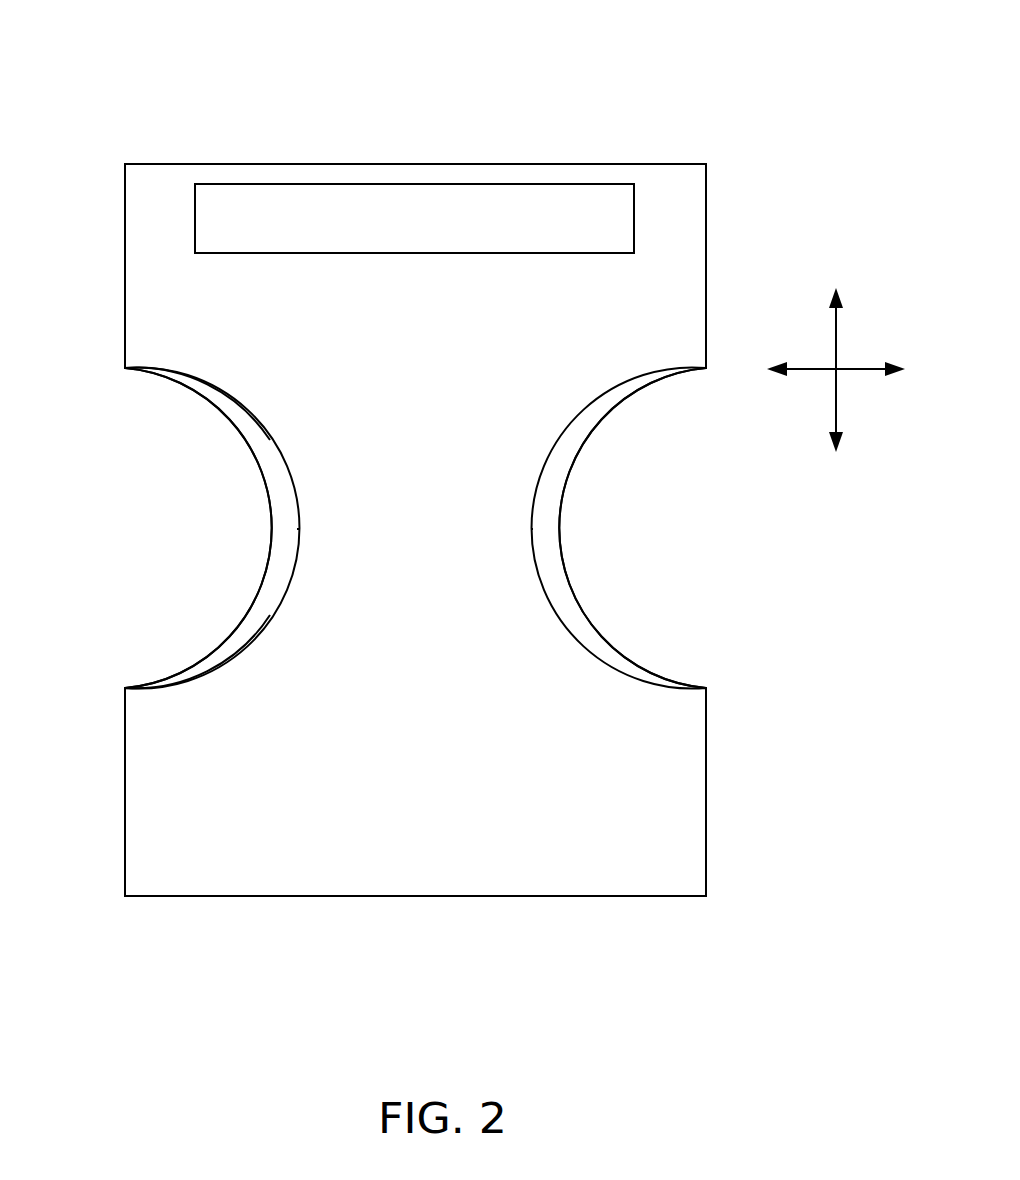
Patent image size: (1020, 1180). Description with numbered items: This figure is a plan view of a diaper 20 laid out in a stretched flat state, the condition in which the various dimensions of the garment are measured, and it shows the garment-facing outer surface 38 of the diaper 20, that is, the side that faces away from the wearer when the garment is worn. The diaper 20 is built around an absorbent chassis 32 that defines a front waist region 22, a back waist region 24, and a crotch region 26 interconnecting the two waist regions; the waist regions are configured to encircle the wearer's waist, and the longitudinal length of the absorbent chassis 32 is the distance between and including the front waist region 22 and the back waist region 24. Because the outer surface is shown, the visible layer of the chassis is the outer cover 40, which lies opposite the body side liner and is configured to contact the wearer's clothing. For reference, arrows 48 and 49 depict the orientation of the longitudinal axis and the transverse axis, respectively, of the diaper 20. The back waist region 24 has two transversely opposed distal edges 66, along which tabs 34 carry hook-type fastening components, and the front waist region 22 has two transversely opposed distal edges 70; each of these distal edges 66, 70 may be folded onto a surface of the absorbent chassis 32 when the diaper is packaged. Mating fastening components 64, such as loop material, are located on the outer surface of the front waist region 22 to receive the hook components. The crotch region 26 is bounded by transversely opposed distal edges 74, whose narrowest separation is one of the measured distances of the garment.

The diaper 20 is at (512, 100).
The front waist region 22 is at (687, 208).
The back waist region 24 is at (668, 861).
The crotch region 26 is at (505, 532).
The absorbent chassis 32 is at (265, 398).
The tabs 34 is at (683, 723).
The garment-facing outer surface 38 is at (220, 692).
The outer cover 40 is at (442, 807).
The longitudinal axis arrow 48 is at (836, 330).
The transverse axis arrow 49 is at (862, 370).
The mating fastening components 64 is at (337, 217).
The distal edges of the back waist region 66 is at (708, 795).
The distal edges of the front waist region 70 is at (706, 283).
The distal edges of the crotch region 74 is at (293, 500).